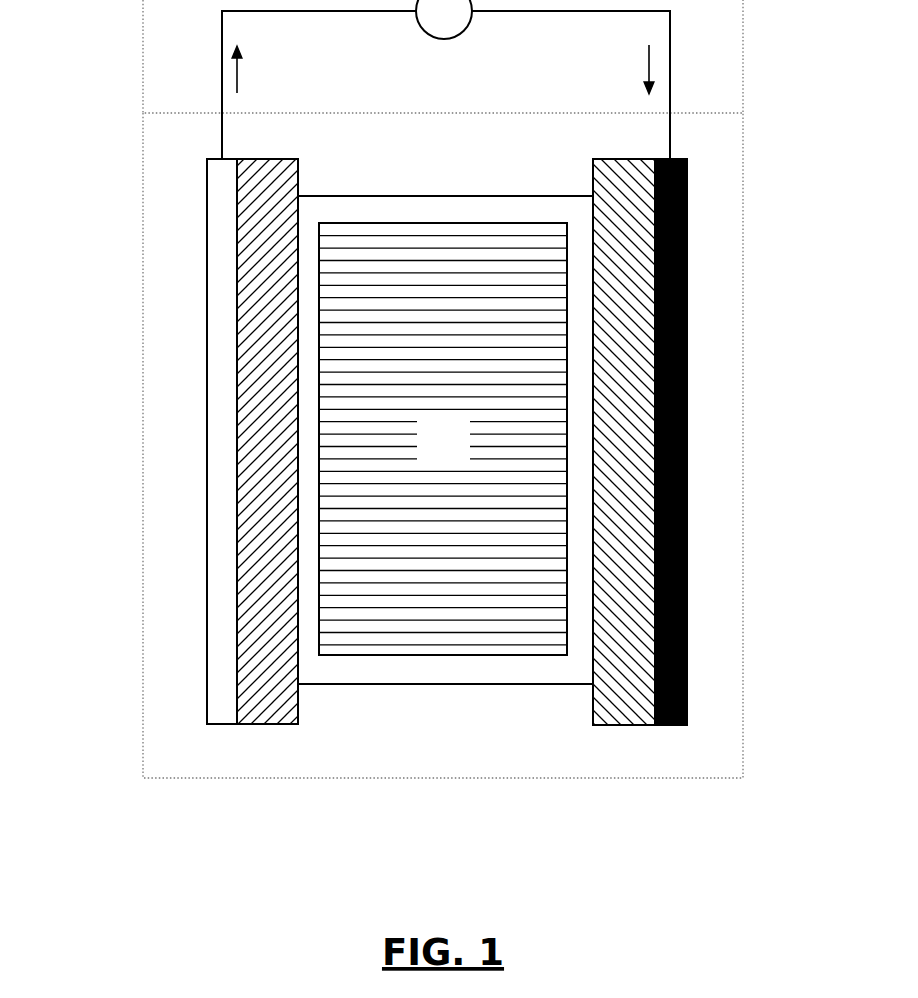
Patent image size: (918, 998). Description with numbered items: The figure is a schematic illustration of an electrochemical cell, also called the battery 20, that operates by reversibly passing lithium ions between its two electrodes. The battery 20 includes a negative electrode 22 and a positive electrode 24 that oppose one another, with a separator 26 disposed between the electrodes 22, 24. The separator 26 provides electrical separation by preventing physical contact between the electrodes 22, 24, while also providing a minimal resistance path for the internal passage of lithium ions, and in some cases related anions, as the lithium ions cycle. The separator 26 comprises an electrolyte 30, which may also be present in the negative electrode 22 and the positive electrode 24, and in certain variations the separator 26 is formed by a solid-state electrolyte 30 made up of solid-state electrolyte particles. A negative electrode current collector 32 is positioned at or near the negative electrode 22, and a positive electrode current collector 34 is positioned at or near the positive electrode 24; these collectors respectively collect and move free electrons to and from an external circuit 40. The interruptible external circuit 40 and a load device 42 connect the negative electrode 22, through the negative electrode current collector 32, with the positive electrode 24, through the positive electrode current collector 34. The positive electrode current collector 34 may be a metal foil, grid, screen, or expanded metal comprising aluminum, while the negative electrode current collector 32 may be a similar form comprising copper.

The electrochemical cell 20 is at (143, 195).
The negative electrode 22 is at (623, 725).
The positive electrode 24 is at (267, 724).
The separator 26 is at (445, 684).
The electrolyte 30 is at (443, 439).
The negative electrode current collector 32 is at (687, 441).
The positive electrode current collector 34 is at (207, 441).
The external circuit 40 is at (143, 32).
The load device 42 is at (444, 19).